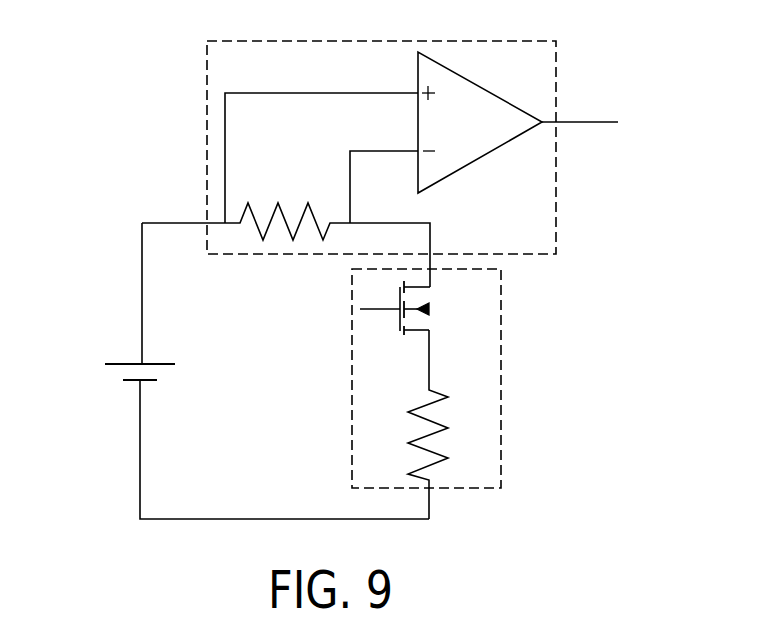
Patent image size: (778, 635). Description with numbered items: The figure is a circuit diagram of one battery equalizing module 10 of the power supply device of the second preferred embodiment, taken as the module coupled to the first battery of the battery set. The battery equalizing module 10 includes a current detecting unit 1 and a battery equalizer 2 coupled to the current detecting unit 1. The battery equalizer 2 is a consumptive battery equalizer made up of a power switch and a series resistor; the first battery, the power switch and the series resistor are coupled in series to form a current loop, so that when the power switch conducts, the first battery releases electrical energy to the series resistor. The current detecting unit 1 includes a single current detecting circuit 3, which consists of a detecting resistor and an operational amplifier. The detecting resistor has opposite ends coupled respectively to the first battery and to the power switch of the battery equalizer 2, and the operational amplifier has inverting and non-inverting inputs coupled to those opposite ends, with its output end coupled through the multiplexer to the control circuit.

The current detecting unit 1 is at (412, 151).
The current detecting circuit 3 is at (556, 44).
The battery equalizer 2 is at (501, 368).
The battery equalizing module 10 is at (398, 267).